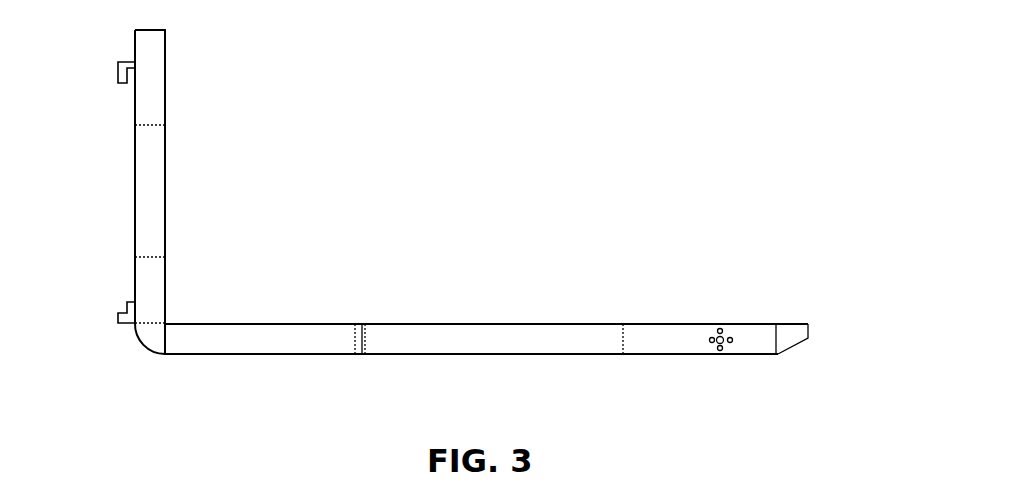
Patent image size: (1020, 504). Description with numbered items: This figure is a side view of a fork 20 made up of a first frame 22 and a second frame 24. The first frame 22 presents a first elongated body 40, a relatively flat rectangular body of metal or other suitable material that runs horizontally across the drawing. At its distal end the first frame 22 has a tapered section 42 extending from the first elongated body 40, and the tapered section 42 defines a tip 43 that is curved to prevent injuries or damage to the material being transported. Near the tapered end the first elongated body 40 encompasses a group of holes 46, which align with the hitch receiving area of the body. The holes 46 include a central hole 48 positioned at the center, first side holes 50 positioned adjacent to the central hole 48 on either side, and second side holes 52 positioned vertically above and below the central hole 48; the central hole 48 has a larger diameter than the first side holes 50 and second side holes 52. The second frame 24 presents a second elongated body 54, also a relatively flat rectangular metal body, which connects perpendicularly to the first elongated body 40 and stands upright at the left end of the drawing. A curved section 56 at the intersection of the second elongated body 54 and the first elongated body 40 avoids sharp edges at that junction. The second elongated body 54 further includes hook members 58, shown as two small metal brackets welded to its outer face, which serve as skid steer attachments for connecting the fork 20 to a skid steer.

The fork 20 is at (662, 60).
The first frame 22 is at (516, 312).
The second frame 24 is at (169, 86).
The first elongated body 40 is at (398, 324).
The tapered section 42 is at (783, 331).
The tip 43 is at (806, 332).
The holes 46 is at (737, 350).
The central hole 48 is at (718, 338).
The first side holes 50 is at (731, 338).
The second side holes 52 is at (720, 329).
The second elongated body 54 is at (193, 152).
The curved section 56 is at (152, 338).
The hook members 58 is at (118, 72).